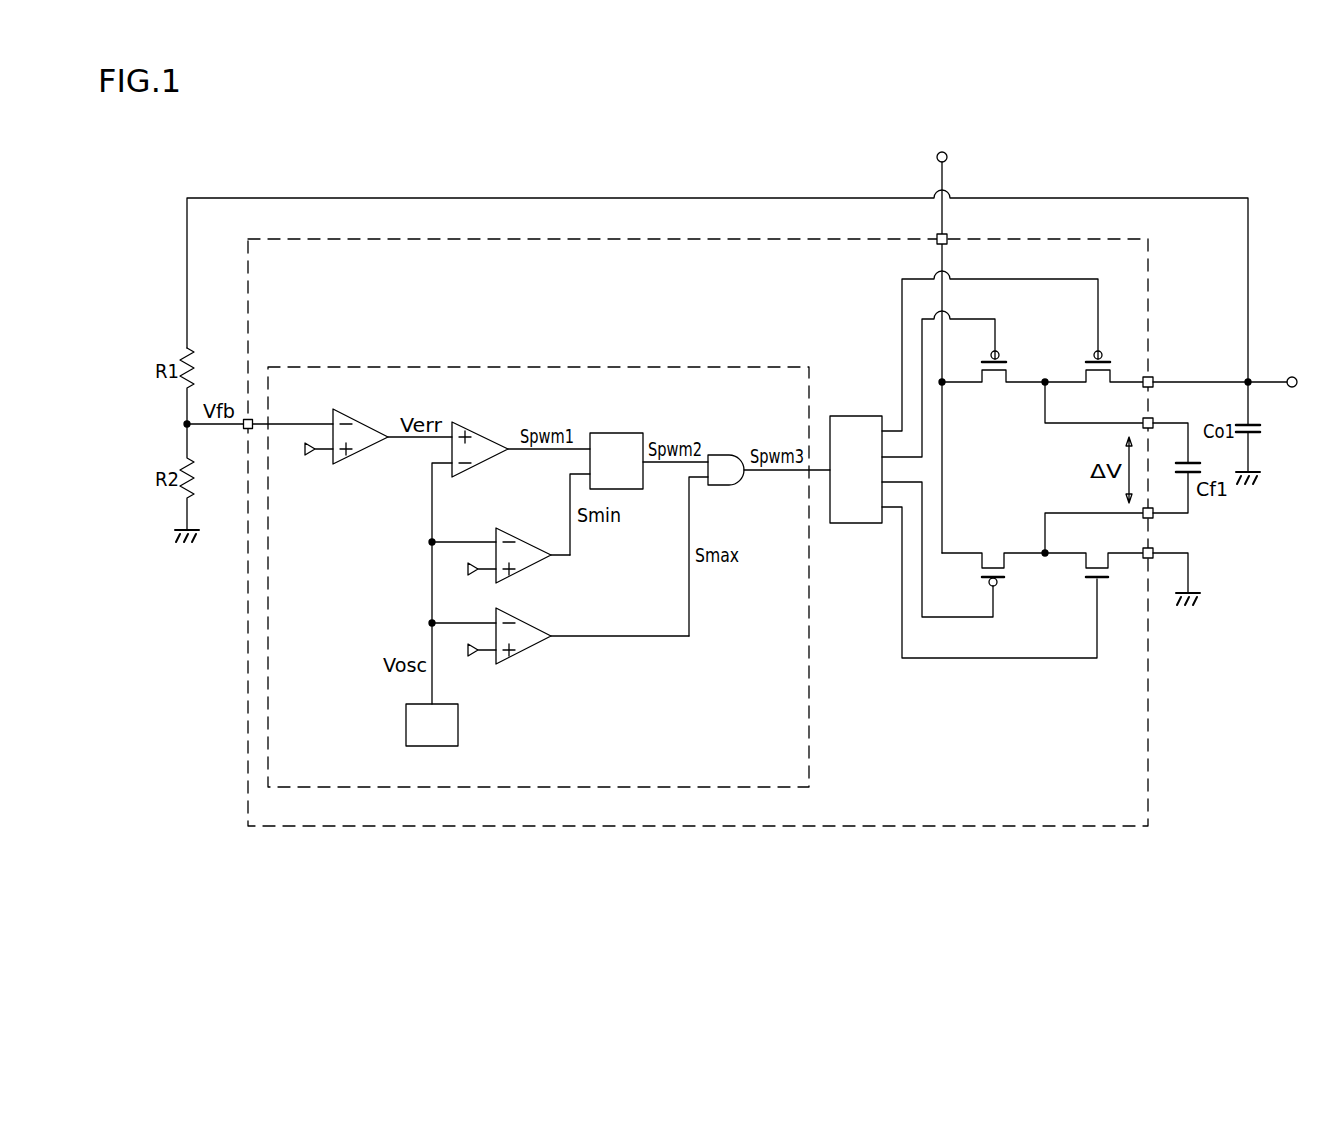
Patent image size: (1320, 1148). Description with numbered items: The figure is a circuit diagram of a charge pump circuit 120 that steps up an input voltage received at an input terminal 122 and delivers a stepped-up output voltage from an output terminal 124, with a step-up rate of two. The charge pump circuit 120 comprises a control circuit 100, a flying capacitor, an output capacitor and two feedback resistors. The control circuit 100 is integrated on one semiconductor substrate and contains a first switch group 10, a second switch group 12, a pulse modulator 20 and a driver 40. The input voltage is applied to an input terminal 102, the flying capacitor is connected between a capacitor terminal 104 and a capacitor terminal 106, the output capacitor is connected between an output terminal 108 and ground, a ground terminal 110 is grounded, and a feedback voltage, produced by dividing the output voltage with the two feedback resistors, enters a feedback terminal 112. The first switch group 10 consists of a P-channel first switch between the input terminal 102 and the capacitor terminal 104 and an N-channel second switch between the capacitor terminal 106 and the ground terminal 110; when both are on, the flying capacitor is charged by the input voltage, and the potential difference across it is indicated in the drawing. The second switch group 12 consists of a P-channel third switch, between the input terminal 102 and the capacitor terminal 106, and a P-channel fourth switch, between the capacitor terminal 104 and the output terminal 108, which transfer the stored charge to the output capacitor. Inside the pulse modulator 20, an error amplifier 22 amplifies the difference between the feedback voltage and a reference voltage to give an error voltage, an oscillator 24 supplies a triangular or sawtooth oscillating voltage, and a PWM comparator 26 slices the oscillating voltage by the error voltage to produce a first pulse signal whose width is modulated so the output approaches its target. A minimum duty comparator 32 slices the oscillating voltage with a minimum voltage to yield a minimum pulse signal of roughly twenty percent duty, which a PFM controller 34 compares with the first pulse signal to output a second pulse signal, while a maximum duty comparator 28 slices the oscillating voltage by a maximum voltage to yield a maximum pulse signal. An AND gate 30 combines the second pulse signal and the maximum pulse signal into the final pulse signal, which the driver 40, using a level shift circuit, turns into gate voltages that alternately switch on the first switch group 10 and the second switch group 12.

The first switch group 10 is at (1045, 464).
The second switch group 12 is at (1045, 468).
The pulse modulator 20 is at (809, 753).
The error amplifier 22 is at (358, 410).
The oscillator 24 is at (458, 722).
The PWM comparator 26 is at (478, 424).
The maximum duty comparator 28 is at (520, 610).
The AND gate 30 is at (727, 455).
The minimum duty comparator 32 is at (520, 530).
The PFM controller 34 is at (617, 433).
The driver 40 is at (856, 416).
The control circuit 100 is at (1148, 797).
The input terminal 102 is at (948, 237).
The capacitor terminal 104 is at (1153, 420).
The capacitor terminal 106 is at (1153, 517).
The output terminal 108 is at (1153, 379).
The ground terminal 110 is at (1150, 558).
The feedback terminal 112 is at (248, 419).
The charge pump circuit 120 is at (754, 885).
The input terminal 122 is at (947, 161).
The output terminal 124 is at (1294, 388).